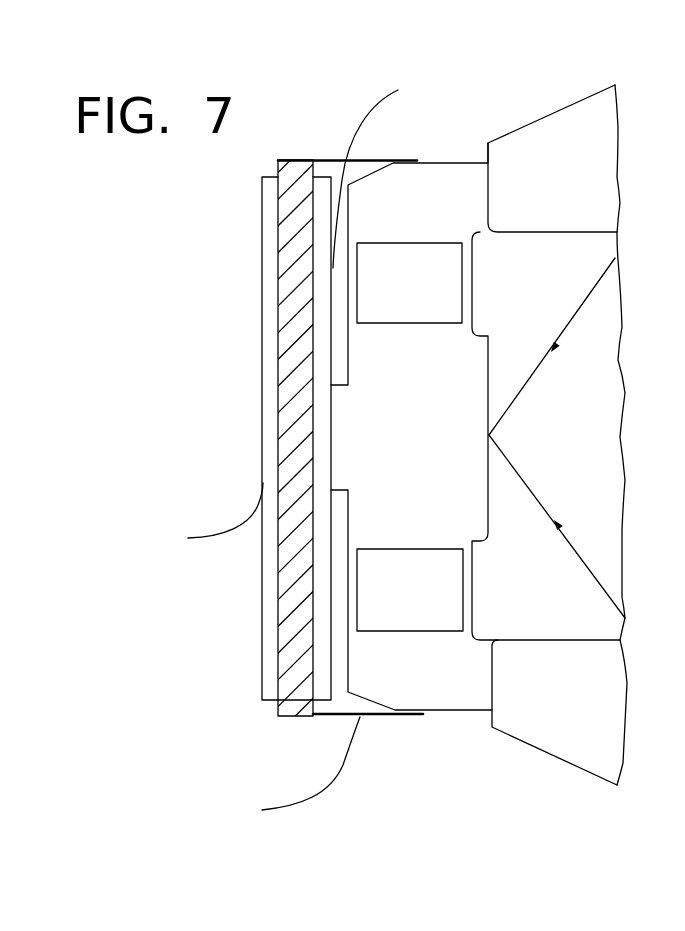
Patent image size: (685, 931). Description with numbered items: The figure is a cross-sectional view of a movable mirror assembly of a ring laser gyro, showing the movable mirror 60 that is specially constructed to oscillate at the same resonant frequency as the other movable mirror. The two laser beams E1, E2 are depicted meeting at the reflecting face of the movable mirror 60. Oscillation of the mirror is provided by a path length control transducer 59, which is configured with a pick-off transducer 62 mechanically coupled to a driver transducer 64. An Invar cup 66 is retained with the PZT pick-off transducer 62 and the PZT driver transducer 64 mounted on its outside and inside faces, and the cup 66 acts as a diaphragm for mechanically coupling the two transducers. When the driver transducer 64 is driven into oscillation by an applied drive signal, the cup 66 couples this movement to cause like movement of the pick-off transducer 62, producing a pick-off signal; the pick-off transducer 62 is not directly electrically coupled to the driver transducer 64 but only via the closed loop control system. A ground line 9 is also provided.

The ground line 9 is at (280, 810).
The path length control transducer 59 is at (295, 720).
The movable mirror 60 is at (491, 490).
The pick-off transducer 62 is at (268, 280).
The driver transducer 64 is at (323, 330).
The Invar cup 66 is at (291, 182).
The laser beam E1 is at (585, 565).
The laser beam E2 is at (593, 290).